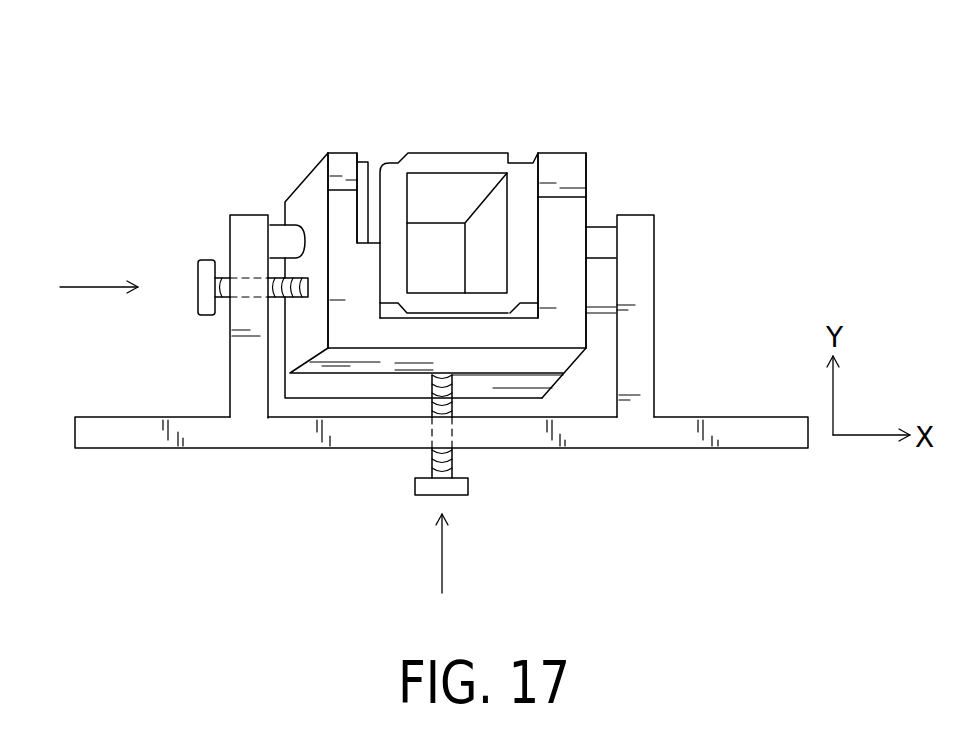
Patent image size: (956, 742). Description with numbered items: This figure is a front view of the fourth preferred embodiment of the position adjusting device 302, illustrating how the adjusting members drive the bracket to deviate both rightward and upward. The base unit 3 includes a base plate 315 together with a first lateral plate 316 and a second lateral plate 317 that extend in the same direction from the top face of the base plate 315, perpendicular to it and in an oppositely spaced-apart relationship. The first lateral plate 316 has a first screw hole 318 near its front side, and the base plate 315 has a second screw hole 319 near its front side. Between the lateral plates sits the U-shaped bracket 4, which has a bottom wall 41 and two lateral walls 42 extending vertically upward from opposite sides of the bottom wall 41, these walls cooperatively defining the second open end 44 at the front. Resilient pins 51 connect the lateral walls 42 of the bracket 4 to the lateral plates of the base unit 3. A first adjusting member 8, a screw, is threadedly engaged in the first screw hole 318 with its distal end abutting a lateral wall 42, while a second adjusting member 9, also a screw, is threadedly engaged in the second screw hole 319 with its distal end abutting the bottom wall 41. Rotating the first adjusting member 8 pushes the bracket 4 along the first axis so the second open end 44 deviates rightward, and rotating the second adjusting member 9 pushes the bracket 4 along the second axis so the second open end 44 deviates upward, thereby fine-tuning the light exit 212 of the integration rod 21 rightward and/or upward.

The base unit 3 is at (419, 369).
The bracket 4 is at (496, 342).
The first adjusting member 8 is at (207, 277).
The second adjusting member 9 is at (415, 486).
The integration rod 21 is at (420, 137).
The bottom wall 41 is at (518, 333).
The lateral walls 42 is at (340, 183).
The second open end 44 is at (402, 305).
The resilient pins 51 is at (600, 245).
The light exit 212 is at (455, 195).
The position adjusting device 302 is at (232, 168).
The base plate 315 is at (742, 434).
The first lateral plate 316 is at (252, 383).
The second lateral plate 317 is at (637, 293).
The first screw hole 318 is at (257, 278).
The second screw hole 319 is at (455, 427).